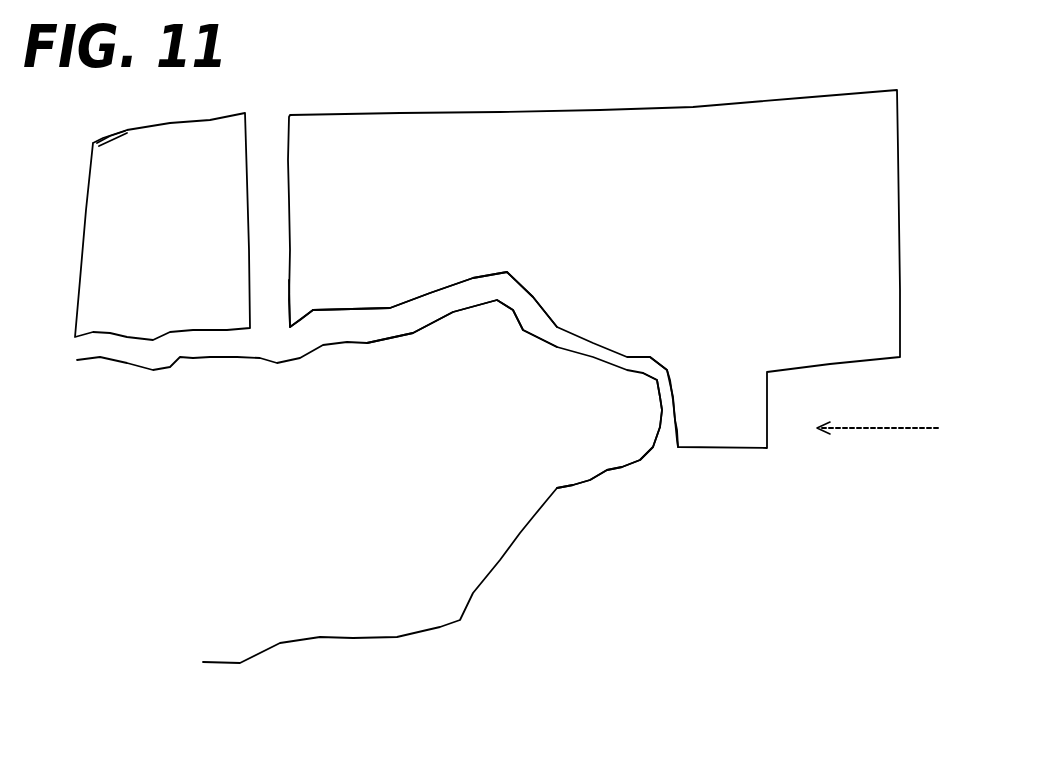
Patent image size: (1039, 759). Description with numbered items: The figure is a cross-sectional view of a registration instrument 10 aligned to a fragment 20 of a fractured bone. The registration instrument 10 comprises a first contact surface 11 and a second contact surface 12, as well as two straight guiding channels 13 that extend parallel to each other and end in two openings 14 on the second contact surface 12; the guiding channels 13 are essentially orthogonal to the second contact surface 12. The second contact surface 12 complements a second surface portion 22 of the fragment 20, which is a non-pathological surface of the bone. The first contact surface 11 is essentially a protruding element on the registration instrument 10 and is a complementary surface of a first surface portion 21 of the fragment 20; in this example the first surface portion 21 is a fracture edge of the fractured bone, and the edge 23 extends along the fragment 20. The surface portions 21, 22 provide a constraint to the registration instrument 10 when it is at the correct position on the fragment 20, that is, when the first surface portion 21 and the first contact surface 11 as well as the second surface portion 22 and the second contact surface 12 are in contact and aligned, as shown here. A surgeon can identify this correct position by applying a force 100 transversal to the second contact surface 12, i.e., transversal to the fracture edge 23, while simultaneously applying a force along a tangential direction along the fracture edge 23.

The registration instrument 10 is at (645, 260).
The first contact surface 11 is at (673, 398).
The second contact surface 12 is at (428, 295).
The guiding channels 13 is at (272, 212).
The openings 14 is at (270, 320).
The fragment 20 is at (280, 462).
The first surface portion 21 is at (653, 417).
The second surface portion 22 is at (442, 328).
The fracture edge 23 is at (653, 378).
The force 100 is at (878, 412).